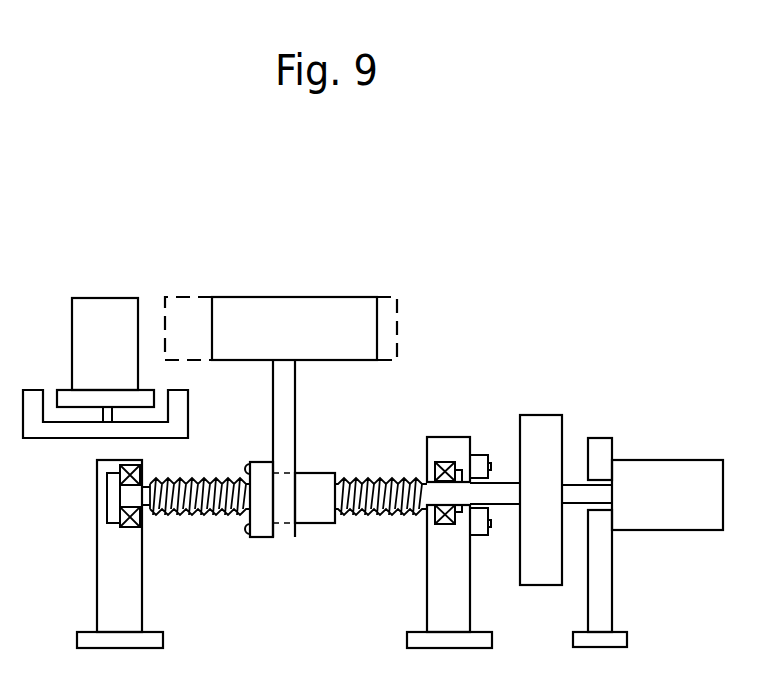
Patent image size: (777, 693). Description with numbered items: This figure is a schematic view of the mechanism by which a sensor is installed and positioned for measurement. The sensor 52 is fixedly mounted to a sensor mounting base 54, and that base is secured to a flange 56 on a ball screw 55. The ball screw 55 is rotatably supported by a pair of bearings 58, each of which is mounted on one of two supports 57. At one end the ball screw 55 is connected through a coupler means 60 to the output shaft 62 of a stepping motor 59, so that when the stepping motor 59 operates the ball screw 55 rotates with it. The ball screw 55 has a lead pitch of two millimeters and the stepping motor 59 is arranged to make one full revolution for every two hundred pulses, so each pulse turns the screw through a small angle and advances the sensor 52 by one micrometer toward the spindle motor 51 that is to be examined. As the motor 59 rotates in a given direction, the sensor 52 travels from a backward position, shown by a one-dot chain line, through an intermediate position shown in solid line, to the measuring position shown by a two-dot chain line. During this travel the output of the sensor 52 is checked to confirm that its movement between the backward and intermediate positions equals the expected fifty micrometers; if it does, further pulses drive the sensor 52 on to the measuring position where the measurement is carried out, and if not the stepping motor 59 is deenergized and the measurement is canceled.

The spindle motor 51 is at (72, 317).
The sensor 52 is at (180, 295).
The sensor mounting base 54 is at (295, 412).
The ball screw 55 is at (366, 514).
The flange 56 is at (264, 528).
The supports 57 is at (140, 558).
The bearings 58 is at (126, 465).
The stepping motor 59 is at (638, 522).
The coupler means 60 is at (543, 586).
The output shaft 62 is at (568, 483).